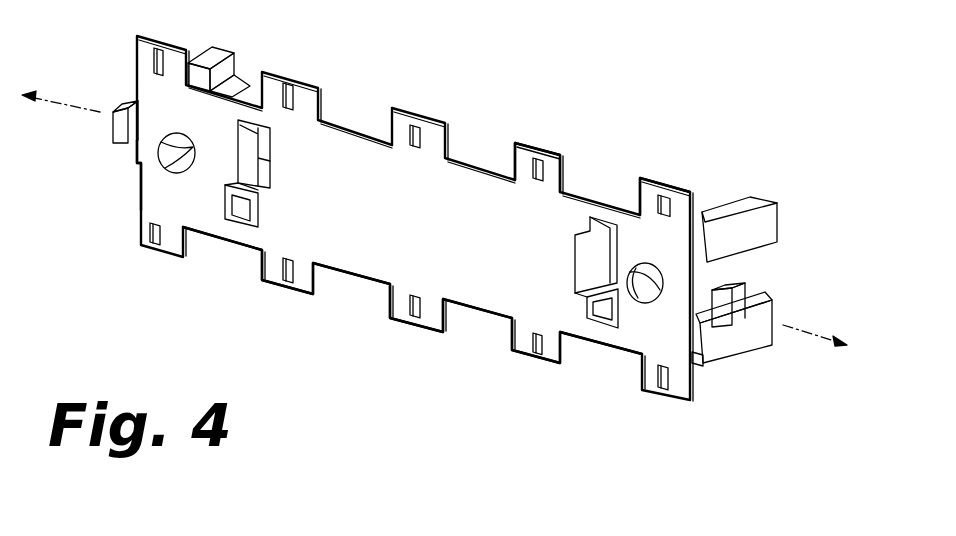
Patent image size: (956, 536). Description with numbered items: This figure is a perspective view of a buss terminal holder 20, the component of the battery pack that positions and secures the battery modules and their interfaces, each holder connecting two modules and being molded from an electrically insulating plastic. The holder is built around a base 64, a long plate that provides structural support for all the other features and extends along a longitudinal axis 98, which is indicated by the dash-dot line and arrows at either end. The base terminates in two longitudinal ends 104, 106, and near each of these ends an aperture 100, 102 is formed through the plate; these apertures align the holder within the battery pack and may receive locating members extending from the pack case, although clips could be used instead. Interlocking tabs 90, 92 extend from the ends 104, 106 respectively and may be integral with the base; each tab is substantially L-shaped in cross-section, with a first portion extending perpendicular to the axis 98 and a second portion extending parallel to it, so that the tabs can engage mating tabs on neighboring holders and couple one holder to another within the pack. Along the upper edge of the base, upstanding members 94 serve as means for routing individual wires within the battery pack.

The buss terminal holder 20 is at (434, 236).
The base 64 is at (502, 315).
The interlocking tab 90 is at (722, 307).
The interlocking tab 92 is at (110, 130).
The member 94 is at (647, 180).
The longitudinal axis 98 is at (783, 325).
The aperture 100 is at (637, 300).
The aperture 102 is at (177, 158).
The longitudinal end 104 is at (705, 362).
The longitudinal end 106 is at (137, 202).